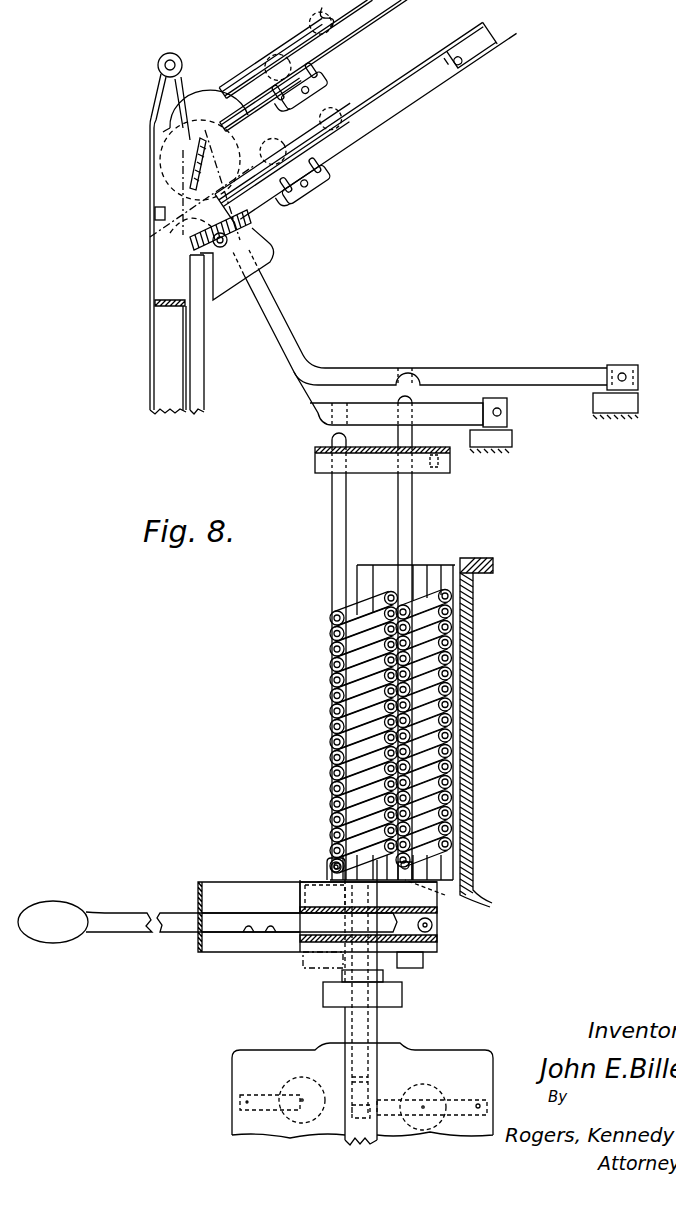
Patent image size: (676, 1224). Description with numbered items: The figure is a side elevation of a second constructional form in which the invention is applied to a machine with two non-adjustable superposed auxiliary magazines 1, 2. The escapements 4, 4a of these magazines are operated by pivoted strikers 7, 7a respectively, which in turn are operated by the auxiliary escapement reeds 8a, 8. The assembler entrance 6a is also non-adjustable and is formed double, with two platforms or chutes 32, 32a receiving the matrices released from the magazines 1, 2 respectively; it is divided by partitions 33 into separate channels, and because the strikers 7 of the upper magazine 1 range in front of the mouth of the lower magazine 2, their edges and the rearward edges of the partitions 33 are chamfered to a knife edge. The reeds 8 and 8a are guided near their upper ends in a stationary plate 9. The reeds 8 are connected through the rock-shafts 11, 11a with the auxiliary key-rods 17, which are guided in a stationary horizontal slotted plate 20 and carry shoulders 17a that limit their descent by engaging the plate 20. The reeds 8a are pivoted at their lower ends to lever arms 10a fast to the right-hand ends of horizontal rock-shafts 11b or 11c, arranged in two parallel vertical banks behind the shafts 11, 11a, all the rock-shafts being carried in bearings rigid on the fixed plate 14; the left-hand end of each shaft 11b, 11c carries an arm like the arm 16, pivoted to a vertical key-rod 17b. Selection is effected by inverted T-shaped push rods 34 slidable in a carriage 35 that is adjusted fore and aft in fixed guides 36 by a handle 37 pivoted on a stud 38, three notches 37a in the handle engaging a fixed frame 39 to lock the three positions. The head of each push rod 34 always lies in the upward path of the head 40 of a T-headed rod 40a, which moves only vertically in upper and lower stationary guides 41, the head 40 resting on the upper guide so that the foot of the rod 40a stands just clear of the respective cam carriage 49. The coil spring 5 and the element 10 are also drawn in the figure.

The auxiliary magazine 1 is at (328, 17).
The auxiliary magazine 2 is at (395, 73).
The escapement 4 is at (300, 50).
The escapement 4a is at (320, 174).
The spring 5 is at (262, 52).
The assembler entrance 6a is at (152, 277).
The pivoted striker 7 is at (190, 177).
The pivoted striker 7a is at (257, 233).
The auxiliary escapement reed 8 is at (330, 438).
The auxiliary escapement reed 8a is at (408, 488).
The stationary plate 9 is at (317, 451).
The roller 10 is at (330, 657).
The lever arm 10a is at (410, 612).
The rock-shaft 11 is at (368, 598).
The rock-shaft 11a is at (388, 603).
The rock-shaft 11b is at (447, 605).
The rock-shaft 11c is at (444, 641).
The fixed plate 14 is at (475, 696).
The lever arm 16 is at (300, 888).
The auxiliary key-rod 17 is at (328, 878).
The shoulder 17a is at (410, 885).
The key-rod 17b is at (412, 866).
The slotted plate 20 is at (290, 880).
The platform or chute 32 is at (177, 127).
The platform or chute 32a is at (263, 247).
The partition 33 is at (172, 130).
The push rod 34 is at (335, 948).
The carriage 35 is at (352, 940).
The fixed guide 36 is at (270, 933).
The handle 37 is at (135, 915).
The notch 37a is at (247, 933).
The stud 38 is at (432, 930).
The fixed guide or frame 39 is at (198, 942).
The head 40 is at (385, 975).
The T-headed rod 40a is at (350, 1022).
The stationary guide 41 is at (385, 990).
The cam carriage 49 is at (260, 1100).